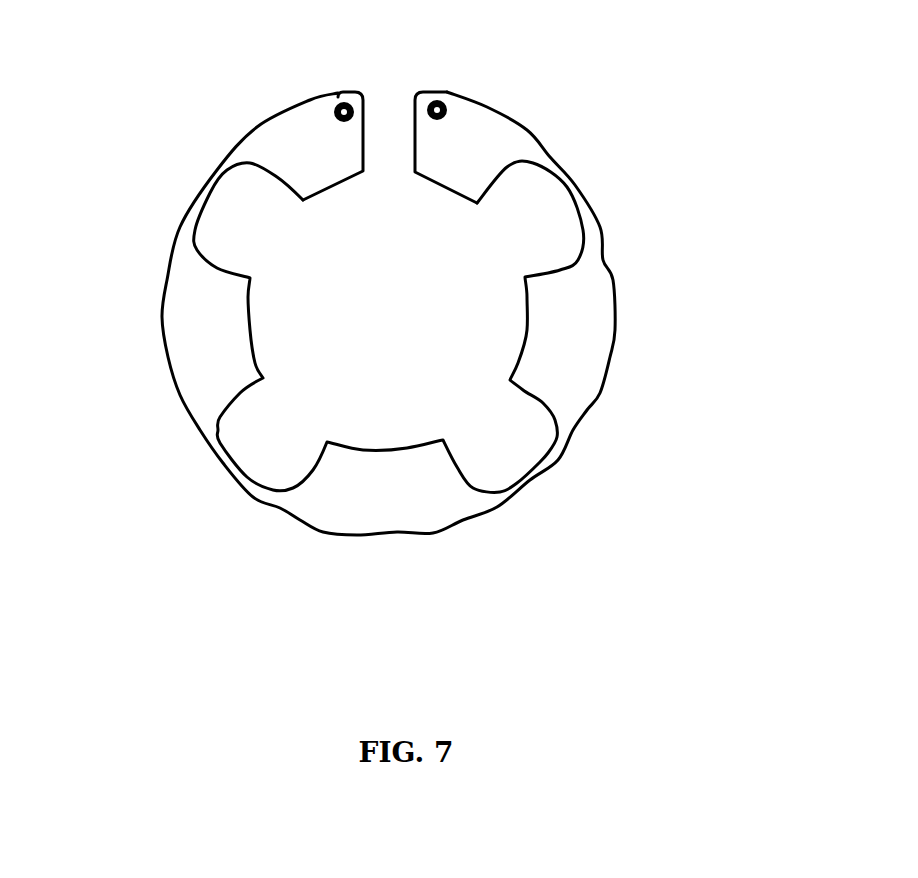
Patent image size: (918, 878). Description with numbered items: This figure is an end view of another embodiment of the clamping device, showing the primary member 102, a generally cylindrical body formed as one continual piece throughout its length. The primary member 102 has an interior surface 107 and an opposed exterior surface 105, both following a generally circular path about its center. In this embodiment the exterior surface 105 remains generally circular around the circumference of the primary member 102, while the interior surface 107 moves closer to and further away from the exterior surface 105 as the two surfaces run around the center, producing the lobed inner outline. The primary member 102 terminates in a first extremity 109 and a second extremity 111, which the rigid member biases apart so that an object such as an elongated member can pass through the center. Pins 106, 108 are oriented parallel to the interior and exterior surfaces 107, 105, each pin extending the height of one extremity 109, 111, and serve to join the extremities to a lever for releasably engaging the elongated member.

The primary member 102 is at (409, 321).
The exterior surface 105 is at (162, 317).
The pin 106 is at (340, 100).
The interior surface 107 is at (528, 333).
The pin 108 is at (447, 100).
The first extremity 109 is at (322, 148).
The second extremity 111 is at (483, 158).